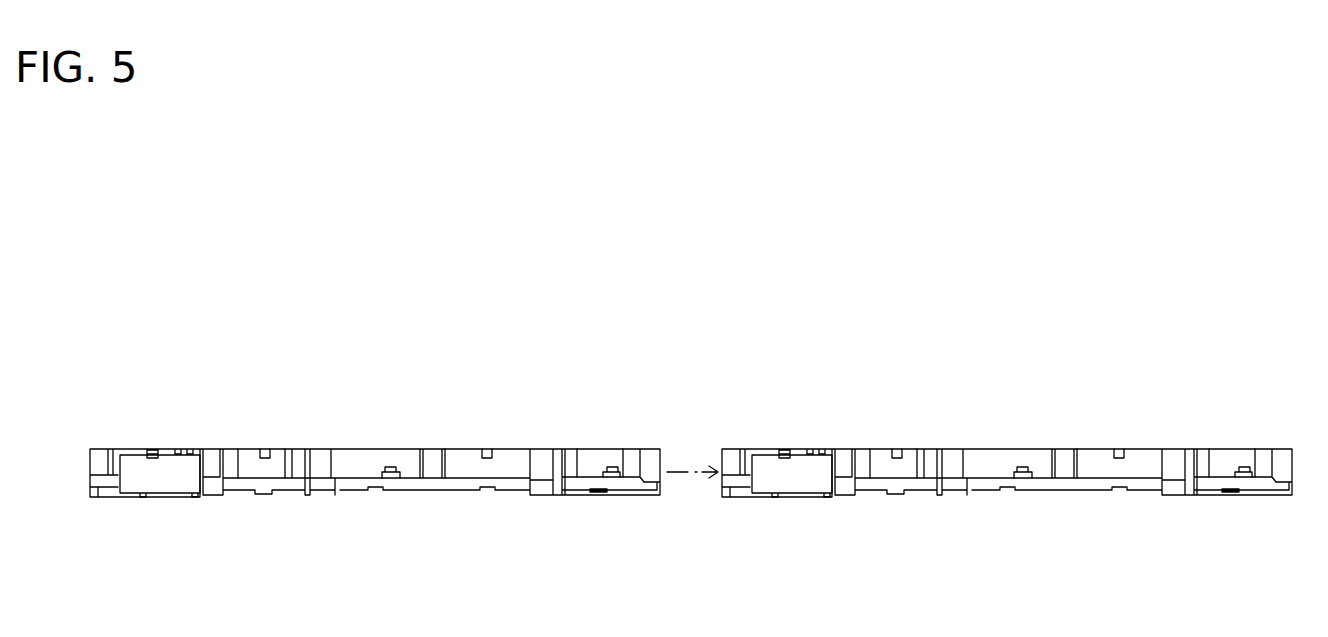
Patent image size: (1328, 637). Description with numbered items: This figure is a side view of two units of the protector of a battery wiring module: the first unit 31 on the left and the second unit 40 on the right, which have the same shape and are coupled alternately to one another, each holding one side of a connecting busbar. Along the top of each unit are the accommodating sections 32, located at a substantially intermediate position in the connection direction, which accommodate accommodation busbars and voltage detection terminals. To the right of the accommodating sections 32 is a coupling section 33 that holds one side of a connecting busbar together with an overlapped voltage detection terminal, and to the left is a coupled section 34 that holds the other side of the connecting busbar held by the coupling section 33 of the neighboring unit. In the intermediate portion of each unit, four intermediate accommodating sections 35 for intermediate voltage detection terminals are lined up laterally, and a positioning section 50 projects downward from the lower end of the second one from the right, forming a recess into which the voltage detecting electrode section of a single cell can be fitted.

The first unit 31 is at (374, 379).
The second unit 40 is at (977, 379).
The accommodating section 32 is at (466, 454).
The coupling section 33 is at (609, 511).
The coupled section 34 is at (271, 484).
The intermediate accommodating section 35 is at (139, 454).
The positioning section 50 is at (337, 501).